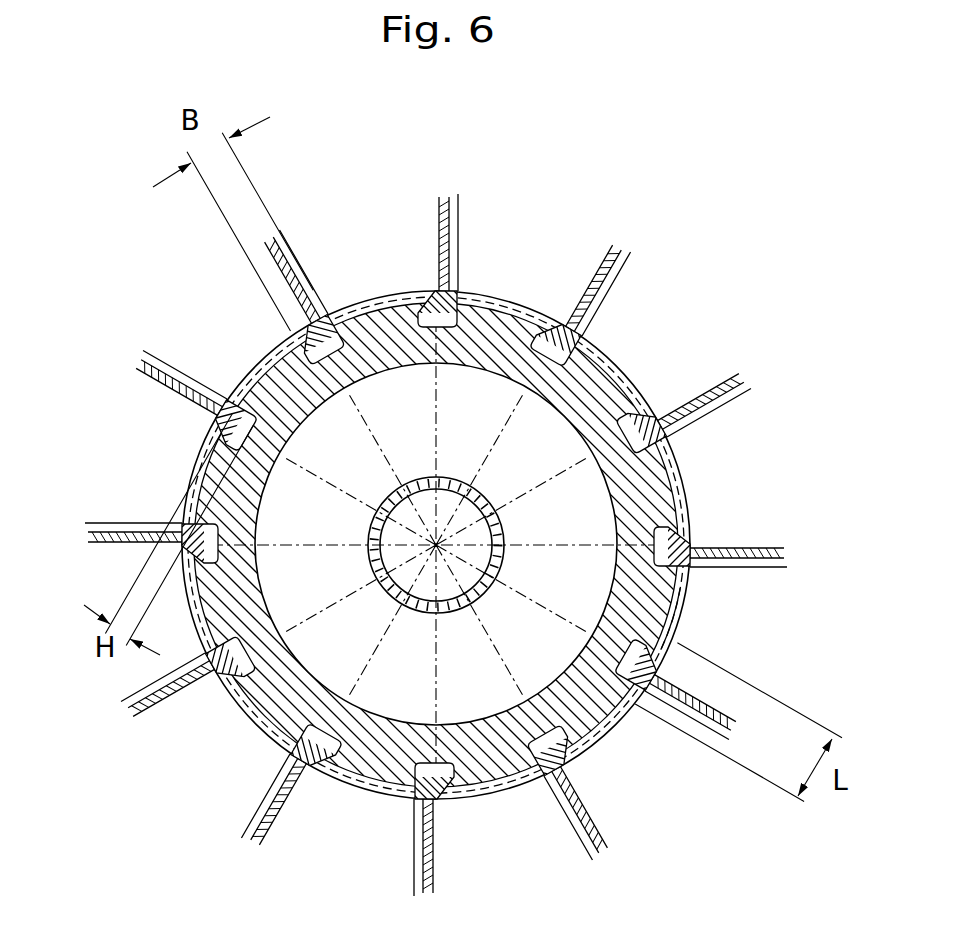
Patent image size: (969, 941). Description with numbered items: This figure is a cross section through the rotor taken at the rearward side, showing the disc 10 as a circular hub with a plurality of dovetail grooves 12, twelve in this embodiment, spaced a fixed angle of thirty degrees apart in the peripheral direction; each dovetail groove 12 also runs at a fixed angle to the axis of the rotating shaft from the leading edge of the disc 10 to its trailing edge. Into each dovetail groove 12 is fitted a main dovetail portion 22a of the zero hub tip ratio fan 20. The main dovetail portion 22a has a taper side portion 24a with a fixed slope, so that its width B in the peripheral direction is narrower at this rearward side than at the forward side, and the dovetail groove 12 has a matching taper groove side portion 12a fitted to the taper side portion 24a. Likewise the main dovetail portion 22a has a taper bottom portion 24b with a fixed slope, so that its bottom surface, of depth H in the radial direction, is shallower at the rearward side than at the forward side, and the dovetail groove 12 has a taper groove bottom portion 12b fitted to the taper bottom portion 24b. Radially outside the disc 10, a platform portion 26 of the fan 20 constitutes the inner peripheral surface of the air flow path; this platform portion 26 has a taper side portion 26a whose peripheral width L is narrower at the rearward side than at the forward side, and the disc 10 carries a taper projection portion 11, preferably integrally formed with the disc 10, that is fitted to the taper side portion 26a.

The disc 10 is at (649, 497).
The taper projection portion 11 is at (688, 598).
The dovetail groove 12 is at (603, 303).
The taper groove side portion 12a is at (276, 298).
The taper groove bottom portion 12b is at (190, 432).
The zero hub tip ratio fan 20 is at (435, 212).
The main dovetail portion 22a is at (523, 393).
The taper side portion 24a is at (299, 362).
The taper bottom portion 24b is at (253, 450).
The platform portion 26 is at (637, 695).
The taper side portion 26a is at (681, 637).